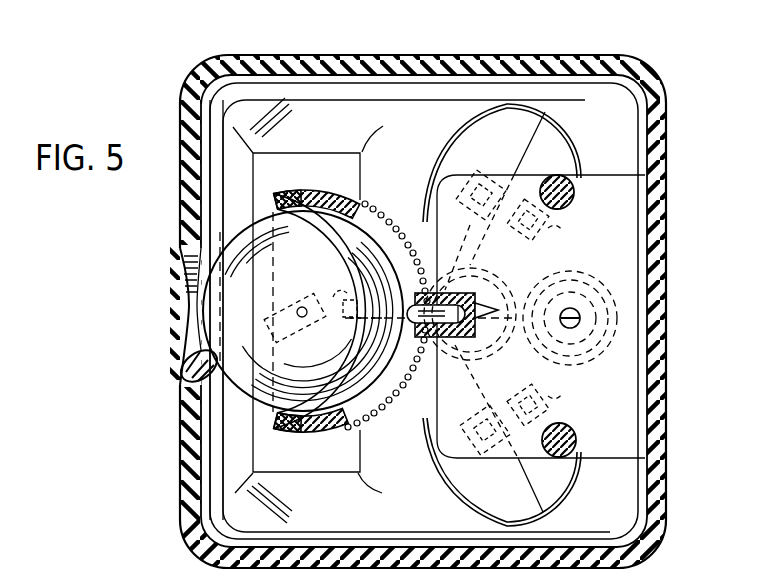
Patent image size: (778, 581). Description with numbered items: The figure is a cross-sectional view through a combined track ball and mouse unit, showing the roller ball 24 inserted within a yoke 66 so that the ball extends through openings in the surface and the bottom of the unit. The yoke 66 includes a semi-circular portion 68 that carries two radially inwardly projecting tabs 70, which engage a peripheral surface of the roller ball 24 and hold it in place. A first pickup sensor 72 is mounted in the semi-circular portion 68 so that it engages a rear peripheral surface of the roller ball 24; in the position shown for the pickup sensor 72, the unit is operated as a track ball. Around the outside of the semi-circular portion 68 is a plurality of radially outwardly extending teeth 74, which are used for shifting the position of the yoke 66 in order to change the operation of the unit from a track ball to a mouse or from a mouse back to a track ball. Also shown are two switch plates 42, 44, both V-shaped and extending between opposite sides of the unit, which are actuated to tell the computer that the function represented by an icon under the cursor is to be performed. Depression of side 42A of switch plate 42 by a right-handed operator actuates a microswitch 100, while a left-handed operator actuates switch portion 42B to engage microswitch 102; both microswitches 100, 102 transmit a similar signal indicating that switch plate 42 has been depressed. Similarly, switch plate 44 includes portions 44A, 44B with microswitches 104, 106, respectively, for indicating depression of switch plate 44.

The roller ball 24 is at (328, 272).
The switch plate 42 is at (489, 278).
The side of switch plate 42A is at (468, 158).
The switch portion 42B is at (462, 483).
The switch plate 44 is at (556, 151).
The portion of switch plate 44A is at (576, 165).
The portion of switch plate 44B is at (568, 483).
The yoke 66 is at (343, 182).
The semi-circular portion 68 is at (330, 440).
The radially inwardly projecting tabs 70 is at (282, 188).
The first pickup sensor 72 is at (437, 298).
The radially outwardly extending teeth 74 is at (403, 212).
The microswitch 100 is at (482, 213).
The microswitch 102 is at (490, 425).
The microswitch 104 is at (480, 210).
The microswitch 106 is at (540, 398).